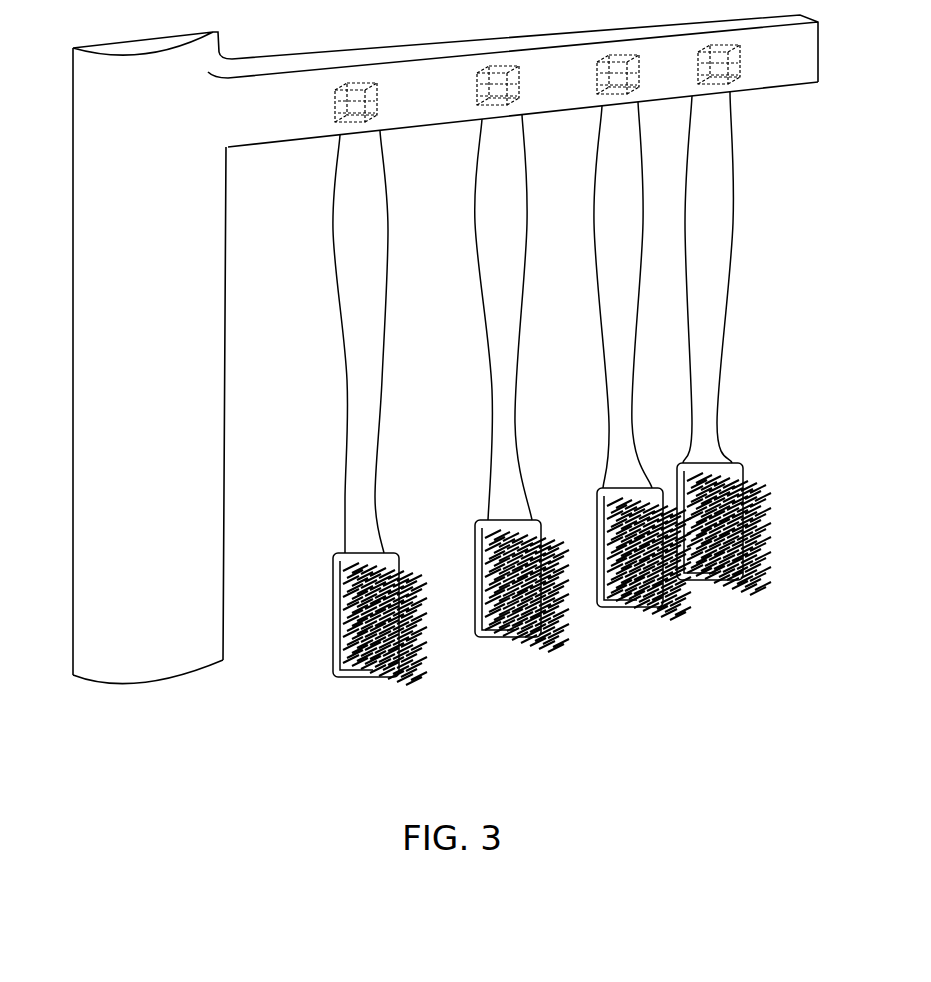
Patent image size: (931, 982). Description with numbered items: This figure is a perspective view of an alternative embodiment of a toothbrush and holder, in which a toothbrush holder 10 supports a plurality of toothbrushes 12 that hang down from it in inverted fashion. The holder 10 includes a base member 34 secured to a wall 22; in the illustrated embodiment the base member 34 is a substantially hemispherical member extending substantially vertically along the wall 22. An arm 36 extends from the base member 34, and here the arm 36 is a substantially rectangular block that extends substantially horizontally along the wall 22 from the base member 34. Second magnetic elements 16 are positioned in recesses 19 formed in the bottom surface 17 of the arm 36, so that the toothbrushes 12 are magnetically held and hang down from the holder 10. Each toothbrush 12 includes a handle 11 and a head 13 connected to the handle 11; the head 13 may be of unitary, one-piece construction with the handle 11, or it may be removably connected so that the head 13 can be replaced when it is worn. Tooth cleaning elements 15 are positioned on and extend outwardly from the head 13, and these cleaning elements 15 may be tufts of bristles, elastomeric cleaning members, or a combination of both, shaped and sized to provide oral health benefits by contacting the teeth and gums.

The toothbrush holder 10 is at (426, 349).
The handle 11 is at (723, 295).
The toothbrush 12 is at (493, 478).
The head 13 is at (727, 463).
The tooth cleaning elements 15 is at (758, 537).
The second magnetic elements 16 is at (477, 84).
The bottom surface 17 is at (663, 99).
The recesses 19 is at (740, 70).
The wall 22 is at (62, 475).
The base member 34 is at (162, 491).
The arm 36 is at (283, 120).